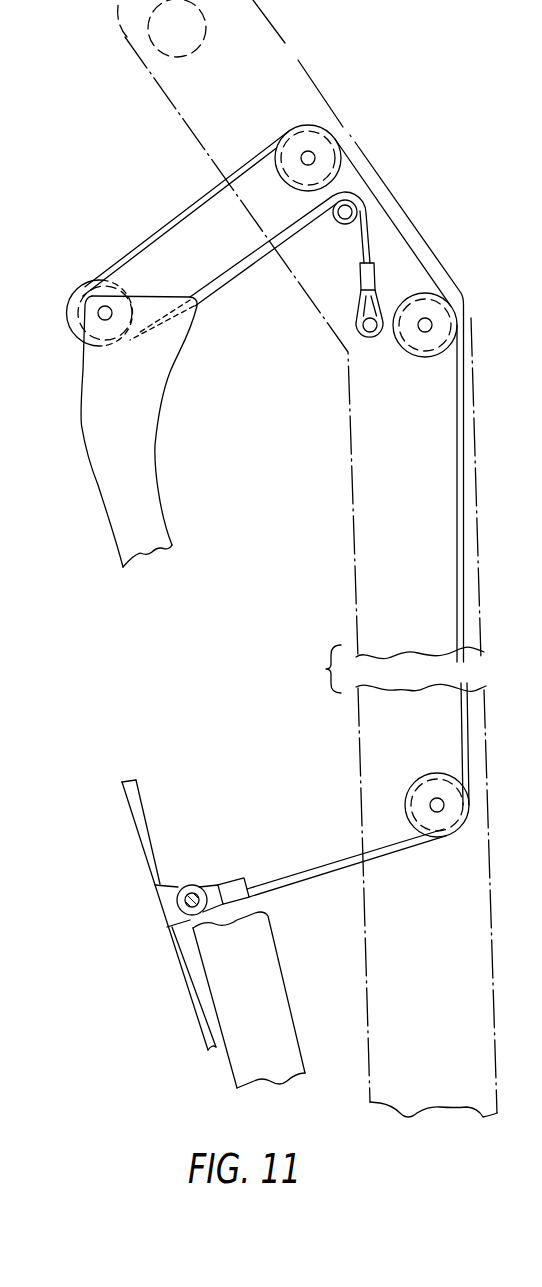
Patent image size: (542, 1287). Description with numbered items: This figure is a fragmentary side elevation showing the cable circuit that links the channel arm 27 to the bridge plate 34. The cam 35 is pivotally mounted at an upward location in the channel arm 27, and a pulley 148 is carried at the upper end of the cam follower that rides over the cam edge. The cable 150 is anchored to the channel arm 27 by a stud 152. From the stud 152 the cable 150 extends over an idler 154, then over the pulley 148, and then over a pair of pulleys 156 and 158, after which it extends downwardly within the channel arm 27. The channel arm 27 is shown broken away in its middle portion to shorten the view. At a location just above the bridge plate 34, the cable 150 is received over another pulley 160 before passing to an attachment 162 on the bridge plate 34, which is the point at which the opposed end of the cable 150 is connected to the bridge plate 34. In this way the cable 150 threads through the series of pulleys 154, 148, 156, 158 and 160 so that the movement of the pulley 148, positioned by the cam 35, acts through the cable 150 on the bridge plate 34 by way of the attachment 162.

The channel arm 27 is at (474, 395).
The bridge plate 34 is at (148, 829).
The cam 35 is at (150, 500).
The pulley 148 is at (83, 292).
The cable 150 is at (238, 273).
The stud 152 is at (358, 328).
The idler 154 is at (345, 224).
The pulley 156 is at (306, 136).
The pulley 158 is at (417, 347).
The pulley 160 is at (429, 790).
The attachment 162 is at (214, 880).